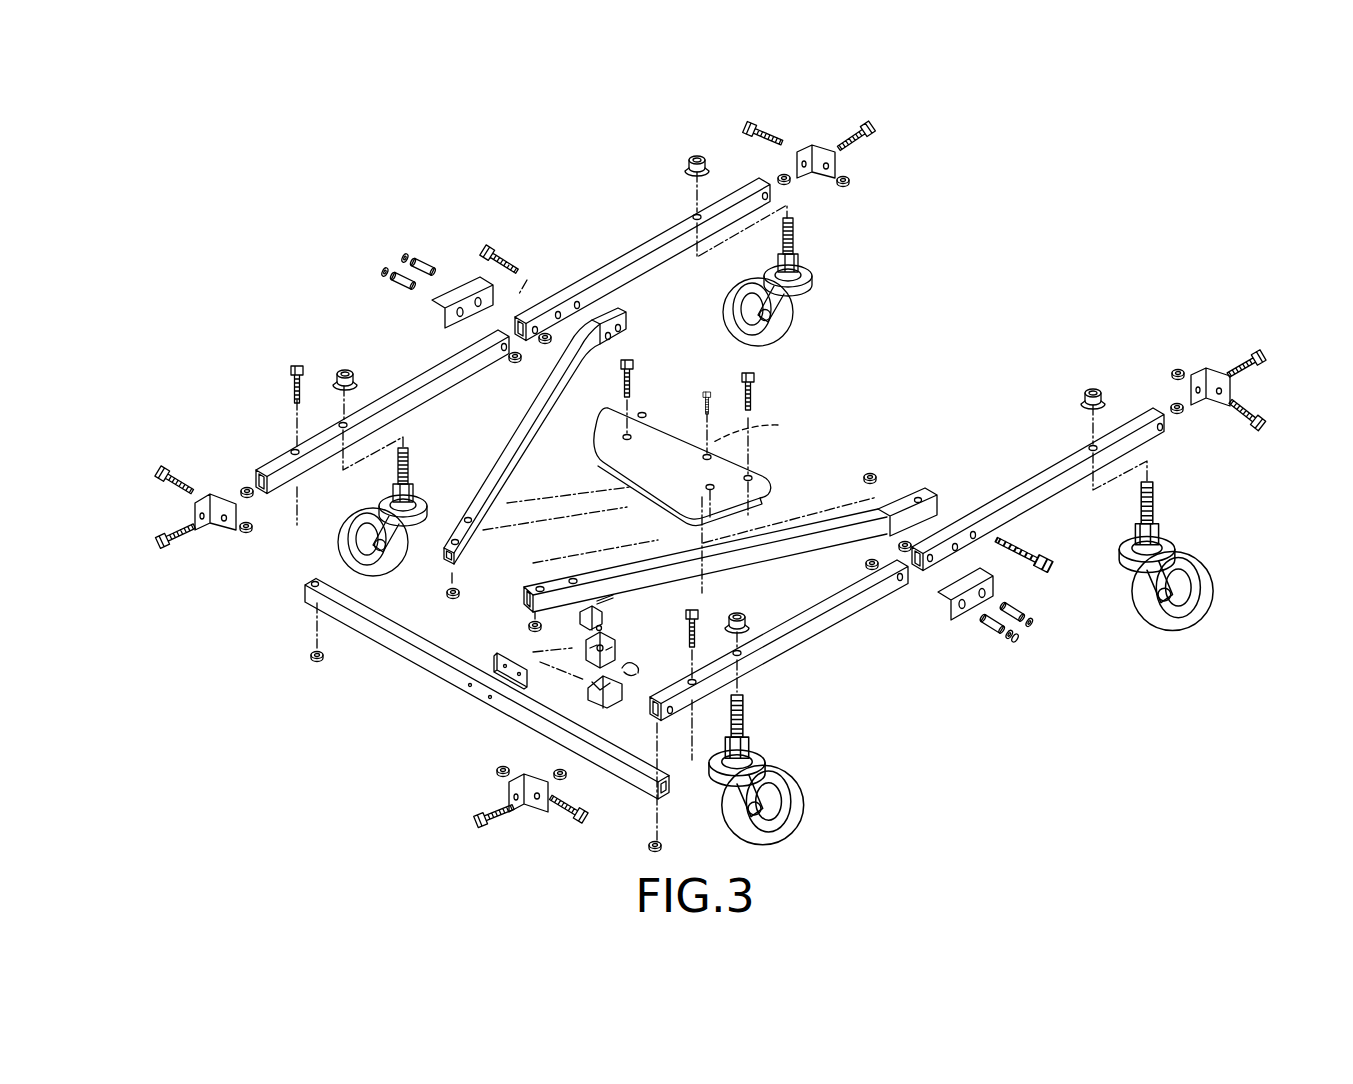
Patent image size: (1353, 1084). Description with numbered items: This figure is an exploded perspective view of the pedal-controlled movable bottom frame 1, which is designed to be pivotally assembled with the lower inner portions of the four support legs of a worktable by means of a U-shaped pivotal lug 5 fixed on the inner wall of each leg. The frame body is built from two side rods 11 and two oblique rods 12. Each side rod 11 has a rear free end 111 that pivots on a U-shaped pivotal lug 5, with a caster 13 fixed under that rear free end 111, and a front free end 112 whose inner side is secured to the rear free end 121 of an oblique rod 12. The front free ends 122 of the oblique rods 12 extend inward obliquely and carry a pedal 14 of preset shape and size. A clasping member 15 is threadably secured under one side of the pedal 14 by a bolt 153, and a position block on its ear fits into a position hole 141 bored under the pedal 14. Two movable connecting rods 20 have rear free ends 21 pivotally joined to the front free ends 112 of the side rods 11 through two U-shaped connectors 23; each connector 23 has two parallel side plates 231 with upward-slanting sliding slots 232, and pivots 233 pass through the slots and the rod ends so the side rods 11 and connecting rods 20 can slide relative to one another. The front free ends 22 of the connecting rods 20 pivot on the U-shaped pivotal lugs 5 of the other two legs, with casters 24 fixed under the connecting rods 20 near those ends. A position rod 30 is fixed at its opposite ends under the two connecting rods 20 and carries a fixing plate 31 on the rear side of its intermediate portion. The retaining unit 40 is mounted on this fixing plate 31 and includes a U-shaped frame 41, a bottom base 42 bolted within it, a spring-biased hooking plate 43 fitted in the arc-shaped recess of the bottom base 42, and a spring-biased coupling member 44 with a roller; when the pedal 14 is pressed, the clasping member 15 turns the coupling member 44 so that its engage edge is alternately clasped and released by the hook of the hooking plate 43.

The pedal-controlled movable bottom frame 1 is at (320, 226).
The side rod 11 is at (633, 245).
The rear free end of side rod 111 is at (760, 182).
The front free end of side rod 112 is at (527, 318).
The oblique rod 12 is at (522, 458).
The rear free end of oblique rod 121 is at (922, 497).
The front free end of oblique rod 122 is at (536, 586).
The caster 13 is at (818, 278).
The pedal 14 is at (653, 408).
The position hole 141 is at (767, 428).
The clasping member 15 is at (634, 637).
The bolt 153 is at (707, 392).
The movable connecting rod 20 is at (407, 374).
The rear free end of movable connecting rod 21 is at (890, 585).
The front free end of movable connecting rod 22 is at (680, 737).
The U-shaped connector 23 is at (463, 280).
The side plate of connector 231 is at (1025, 609).
The sliding slot 232 is at (963, 617).
The pivot 233 is at (993, 633).
The caster 24 is at (428, 512).
The position rod 30 is at (385, 650).
The fixing plate 31 is at (505, 652).
The retaining unit 40 is at (566, 692).
The U-shaped frame 41 is at (580, 656).
The bottom base 42 is at (603, 697).
The hooking plate 43 is at (632, 668).
The coupling member 44 is at (598, 610).
The U-shaped pivotal lug 5 is at (806, 147).